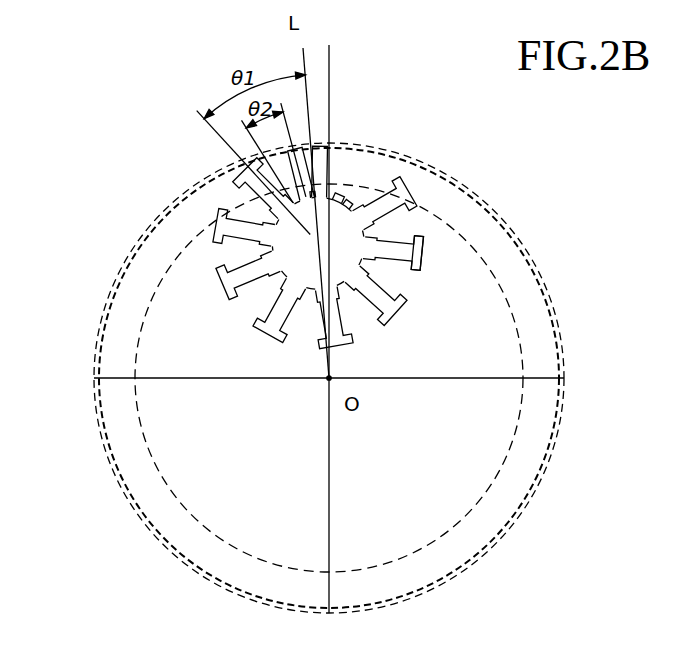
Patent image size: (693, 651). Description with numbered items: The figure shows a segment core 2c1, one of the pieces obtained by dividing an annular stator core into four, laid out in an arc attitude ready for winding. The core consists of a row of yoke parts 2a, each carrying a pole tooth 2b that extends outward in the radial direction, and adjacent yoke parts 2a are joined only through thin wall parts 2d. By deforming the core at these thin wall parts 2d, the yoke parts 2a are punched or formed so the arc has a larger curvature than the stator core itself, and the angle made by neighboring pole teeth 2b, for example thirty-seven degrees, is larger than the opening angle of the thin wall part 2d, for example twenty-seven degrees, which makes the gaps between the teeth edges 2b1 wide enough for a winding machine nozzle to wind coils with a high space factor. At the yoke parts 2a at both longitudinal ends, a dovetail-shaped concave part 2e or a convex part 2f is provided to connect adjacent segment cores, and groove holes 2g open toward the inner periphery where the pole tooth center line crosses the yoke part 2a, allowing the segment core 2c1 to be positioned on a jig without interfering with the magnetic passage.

The yoke part 2a is at (374, 222).
The pole tooth 2b is at (422, 257).
The teeth edge 2b1 is at (422, 270).
The segment core 2c1 is at (205, 344).
The thin wall part 2d is at (367, 233).
The concave part 2e is at (344, 197).
The convex part 2f is at (353, 205).
The groove hole 2g is at (328, 192).